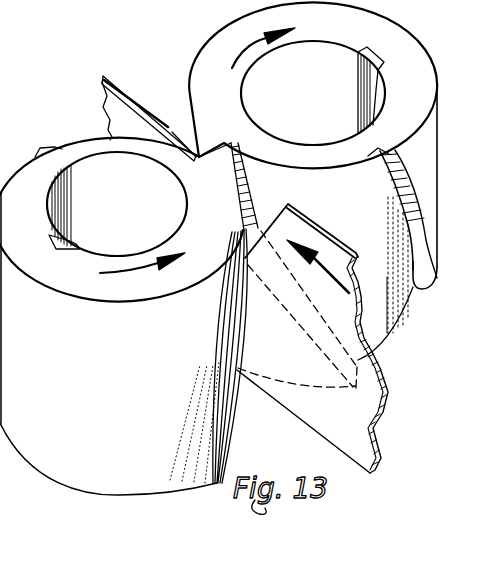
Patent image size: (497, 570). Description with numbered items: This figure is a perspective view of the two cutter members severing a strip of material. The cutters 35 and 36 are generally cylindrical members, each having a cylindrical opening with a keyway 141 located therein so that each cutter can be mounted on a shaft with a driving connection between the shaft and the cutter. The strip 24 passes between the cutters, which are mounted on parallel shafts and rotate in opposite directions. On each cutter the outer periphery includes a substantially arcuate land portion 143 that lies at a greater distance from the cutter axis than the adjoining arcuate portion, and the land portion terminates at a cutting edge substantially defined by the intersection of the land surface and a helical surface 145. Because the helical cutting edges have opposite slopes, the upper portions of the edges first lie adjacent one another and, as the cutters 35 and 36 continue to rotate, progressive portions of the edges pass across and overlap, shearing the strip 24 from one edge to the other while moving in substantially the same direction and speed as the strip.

The strip 24 is at (385, 397).
The cutter 35 is at (436, 23).
The cutter 36 is at (123, 326).
The keyway 141 is at (380, 49).
The land portion 143 is at (192, 110).
The helical surface 145 is at (213, 150).